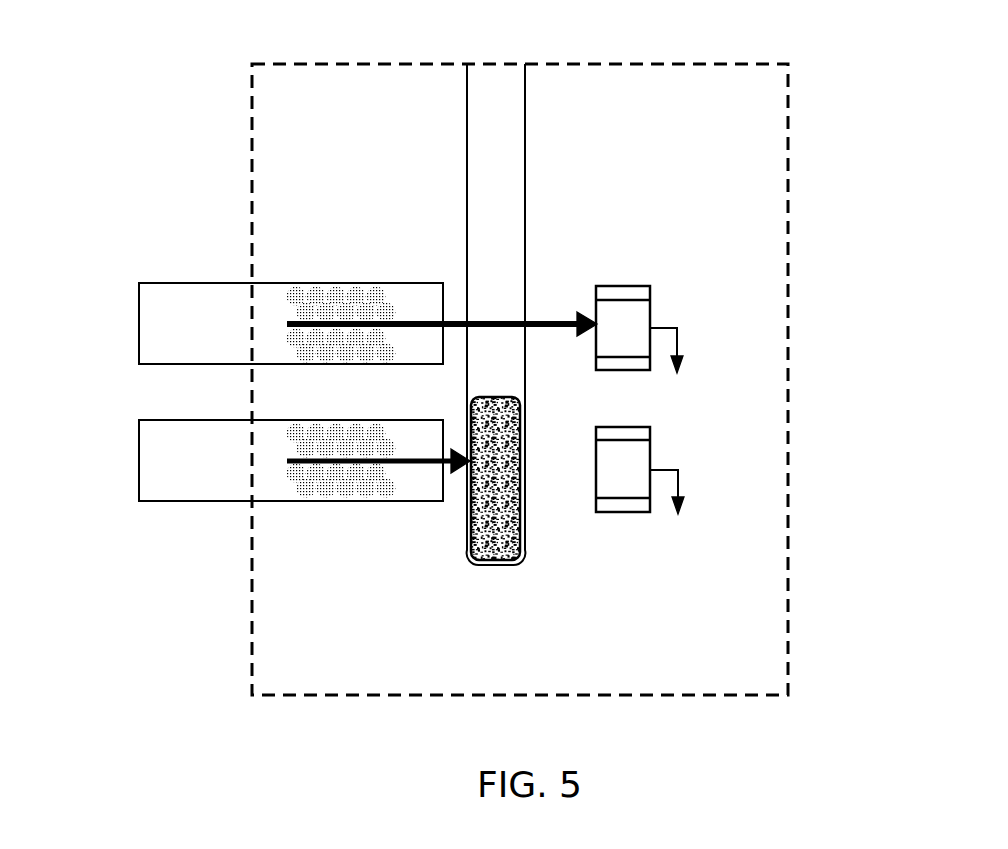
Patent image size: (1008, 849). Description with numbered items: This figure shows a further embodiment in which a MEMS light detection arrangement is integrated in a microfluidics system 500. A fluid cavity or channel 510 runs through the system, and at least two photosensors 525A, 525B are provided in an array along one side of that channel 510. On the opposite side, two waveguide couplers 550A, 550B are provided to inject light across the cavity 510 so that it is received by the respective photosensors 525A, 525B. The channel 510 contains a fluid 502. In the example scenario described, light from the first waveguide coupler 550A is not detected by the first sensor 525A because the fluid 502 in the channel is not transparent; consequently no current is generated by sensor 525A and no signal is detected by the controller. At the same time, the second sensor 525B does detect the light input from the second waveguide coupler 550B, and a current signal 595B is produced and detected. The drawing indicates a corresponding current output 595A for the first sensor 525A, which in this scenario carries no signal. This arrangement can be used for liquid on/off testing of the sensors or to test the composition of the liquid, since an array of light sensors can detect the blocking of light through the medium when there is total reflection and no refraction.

The microfluidics system 500 is at (300, 64).
The fluid cavity or channel 510 is at (525, 165).
The fluid 502 is at (522, 530).
The second waveguide coupler 550B is at (139, 323).
The first waveguide coupler 550A is at (139, 460).
The second photosensor 525B is at (650, 303).
The first photosensor 525A is at (650, 445).
The current signal 595B is at (680, 343).
The first outlet 595A is at (681, 483).